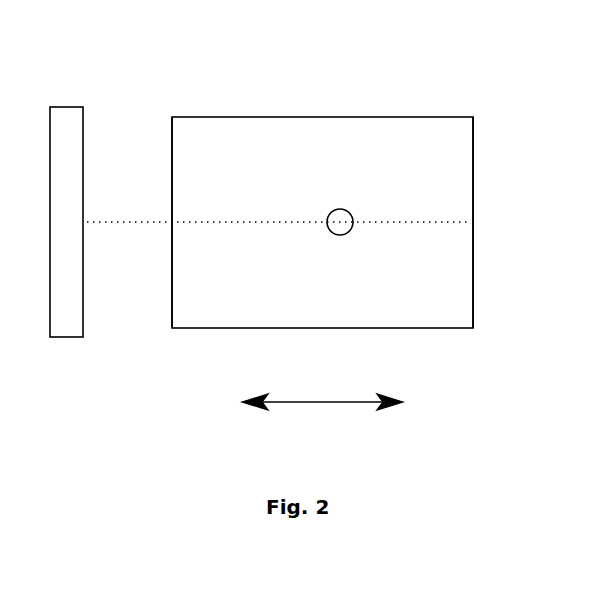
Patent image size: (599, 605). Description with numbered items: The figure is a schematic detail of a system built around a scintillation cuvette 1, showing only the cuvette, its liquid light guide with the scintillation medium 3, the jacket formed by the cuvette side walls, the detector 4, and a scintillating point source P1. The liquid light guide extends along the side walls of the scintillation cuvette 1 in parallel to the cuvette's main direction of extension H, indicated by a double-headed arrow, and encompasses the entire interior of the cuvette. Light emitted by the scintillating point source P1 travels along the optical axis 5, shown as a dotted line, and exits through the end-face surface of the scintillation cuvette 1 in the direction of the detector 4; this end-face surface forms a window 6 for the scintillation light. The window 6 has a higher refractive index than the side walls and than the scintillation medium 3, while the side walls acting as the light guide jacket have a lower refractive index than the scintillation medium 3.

The detector 4 is at (64, 116).
The scintillation cuvette 1 is at (336, 116).
The window 6 is at (172, 185).
The scintillation medium 3 is at (440, 134).
The optical axis 5 is at (446, 221).
The scintillating point source P1 is at (342, 224).
The main direction of extension H is at (305, 403).